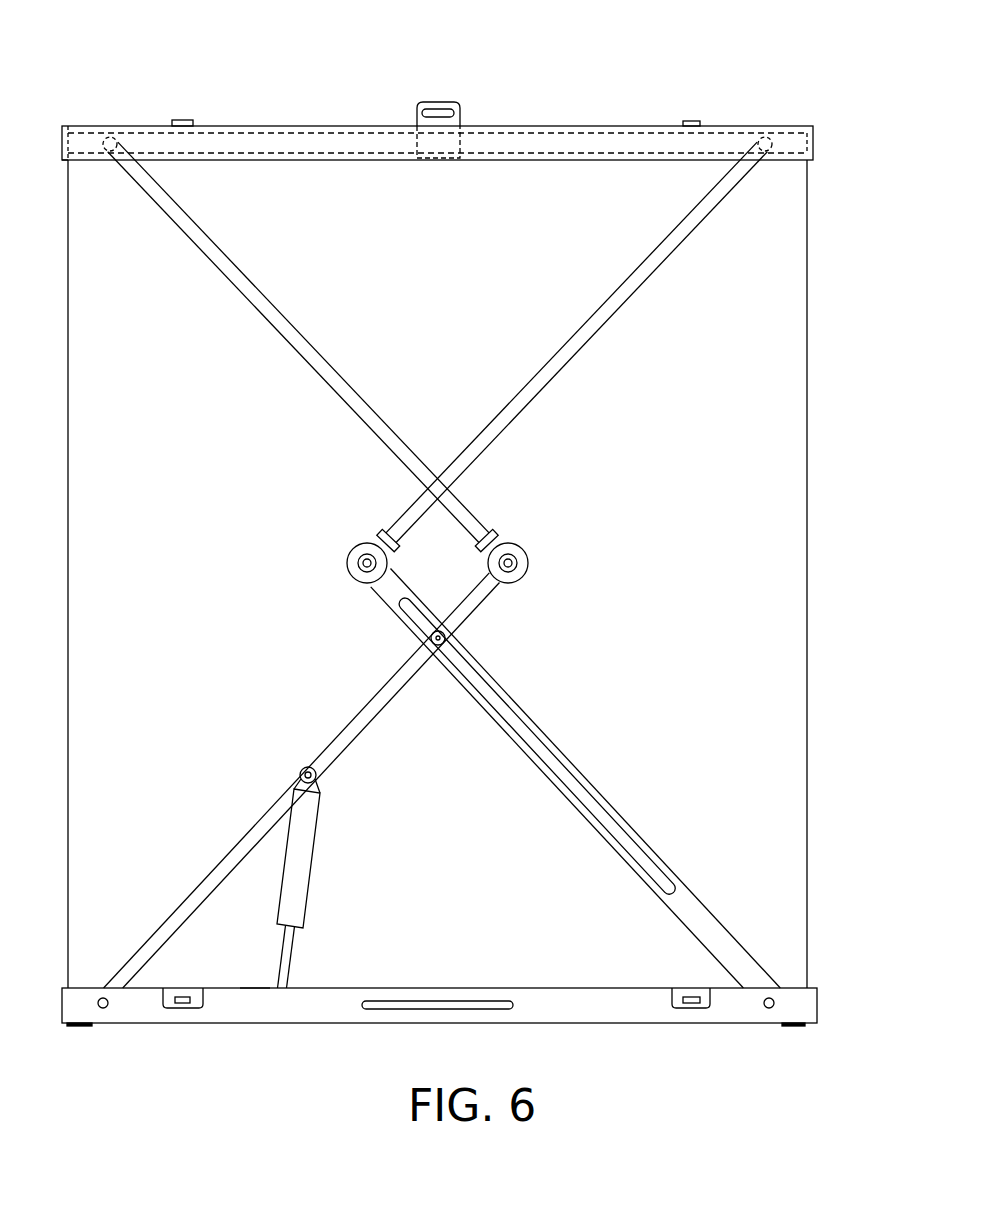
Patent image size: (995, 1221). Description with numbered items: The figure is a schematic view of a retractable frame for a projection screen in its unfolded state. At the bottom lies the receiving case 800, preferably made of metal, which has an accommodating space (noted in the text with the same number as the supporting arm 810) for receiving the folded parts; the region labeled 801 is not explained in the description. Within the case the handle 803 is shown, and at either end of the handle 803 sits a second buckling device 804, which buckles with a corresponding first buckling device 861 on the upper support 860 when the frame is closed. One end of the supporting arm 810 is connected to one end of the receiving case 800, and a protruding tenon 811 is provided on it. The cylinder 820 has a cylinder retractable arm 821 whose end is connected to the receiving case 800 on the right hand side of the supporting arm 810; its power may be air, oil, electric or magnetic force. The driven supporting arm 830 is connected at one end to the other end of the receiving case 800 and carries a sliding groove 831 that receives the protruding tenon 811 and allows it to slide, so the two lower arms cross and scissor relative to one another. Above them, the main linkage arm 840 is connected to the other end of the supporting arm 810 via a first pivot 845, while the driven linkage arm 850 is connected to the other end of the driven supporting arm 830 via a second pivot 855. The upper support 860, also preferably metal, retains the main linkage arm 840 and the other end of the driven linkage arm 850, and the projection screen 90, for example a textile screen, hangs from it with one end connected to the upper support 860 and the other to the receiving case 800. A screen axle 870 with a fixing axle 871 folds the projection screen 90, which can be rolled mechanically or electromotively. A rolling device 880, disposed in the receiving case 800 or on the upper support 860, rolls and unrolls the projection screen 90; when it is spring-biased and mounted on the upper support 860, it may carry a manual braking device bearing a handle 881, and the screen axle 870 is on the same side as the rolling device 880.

The projection screen 90 is at (790, 410).
The receiving case 800 is at (643, 1018).
The bottom bar groove 801 is at (255, 1005).
The handle 803 is at (420, 1004).
The second buckling device 804 is at (165, 998).
The supporting arm 810 is at (208, 886).
The protruding tenon 811 is at (432, 635).
The cylinder 820 is at (298, 853).
The cylinder retractable arm 821 is at (286, 962).
The driven supporting arm 830 is at (712, 932).
The sliding groove 831 is at (525, 725).
The main linkage arm 840 is at (262, 311).
The first pivot 845 is at (510, 563).
The driven linkage arm 850 is at (690, 226).
The second pivot 855 is at (365, 563).
The upper support 860 is at (650, 126).
The first buckling device 861 is at (183, 120).
The screen axle 870 is at (75, 152).
The fixing axle 871 is at (68, 126).
The rolling device 880 is at (460, 148).
The handle 881 is at (438, 100).